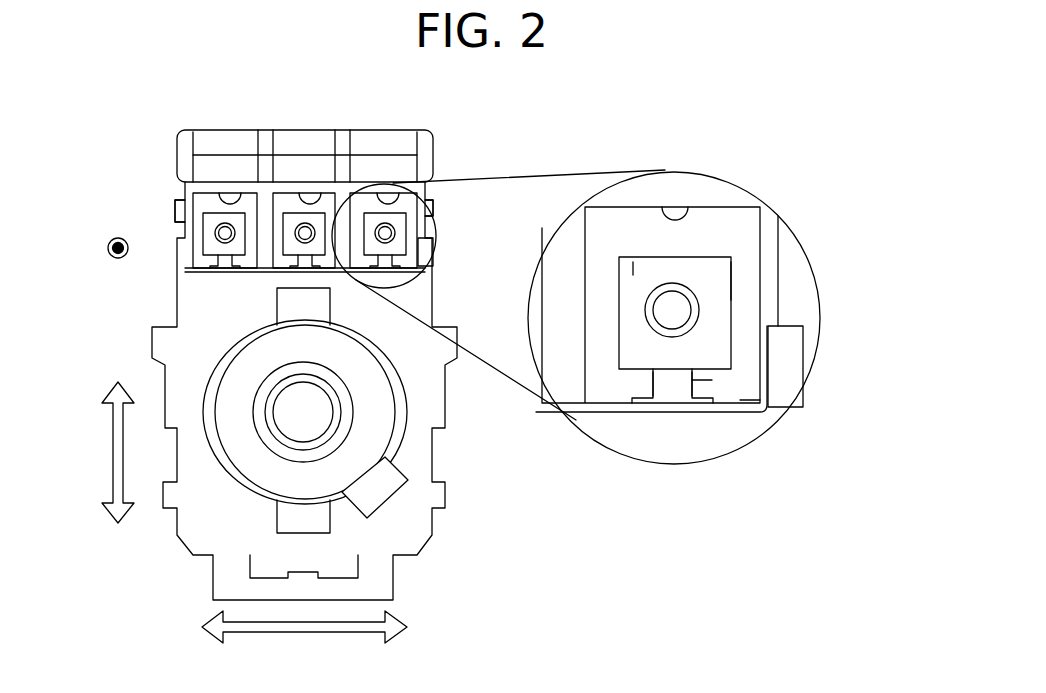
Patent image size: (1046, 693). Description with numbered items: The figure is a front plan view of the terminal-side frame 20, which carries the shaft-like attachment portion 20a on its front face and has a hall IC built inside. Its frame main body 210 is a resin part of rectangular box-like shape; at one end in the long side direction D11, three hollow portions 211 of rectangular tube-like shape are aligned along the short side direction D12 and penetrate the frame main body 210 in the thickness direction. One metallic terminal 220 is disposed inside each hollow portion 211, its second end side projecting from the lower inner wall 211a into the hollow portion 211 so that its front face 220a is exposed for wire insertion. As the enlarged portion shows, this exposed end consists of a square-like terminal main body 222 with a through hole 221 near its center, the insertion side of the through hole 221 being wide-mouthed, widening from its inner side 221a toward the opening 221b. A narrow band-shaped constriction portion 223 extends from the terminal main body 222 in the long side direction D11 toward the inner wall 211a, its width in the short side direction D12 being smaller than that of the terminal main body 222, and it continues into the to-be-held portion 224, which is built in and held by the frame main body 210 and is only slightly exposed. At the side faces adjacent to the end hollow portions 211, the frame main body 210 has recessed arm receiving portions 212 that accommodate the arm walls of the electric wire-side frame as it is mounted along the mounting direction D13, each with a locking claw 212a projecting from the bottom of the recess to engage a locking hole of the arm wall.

The terminal-side frame 20 is at (170, 134).
The shaft-like attachment portion 20a is at (317, 412).
The frame main body 210 is at (177, 325).
The hollow portion 211 is at (240, 195).
The inner wall 211a is at (807, 436).
The arm receiving portion 212 is at (185, 186).
The locking claw 212a is at (176, 212).
The metallic terminal 220 is at (213, 216).
The front face 220a is at (636, 272).
The through hole 221 is at (700, 306).
The inner side 221a is at (668, 325).
The opening 221b is at (648, 322).
The terminal main body 222 is at (731, 268).
The constriction portion 223 is at (694, 382).
The to-be-held portion 224 is at (742, 405).
The long side direction D11 is at (112, 455).
The short side direction D12 is at (302, 633).
The mounting direction D13 is at (110, 242).